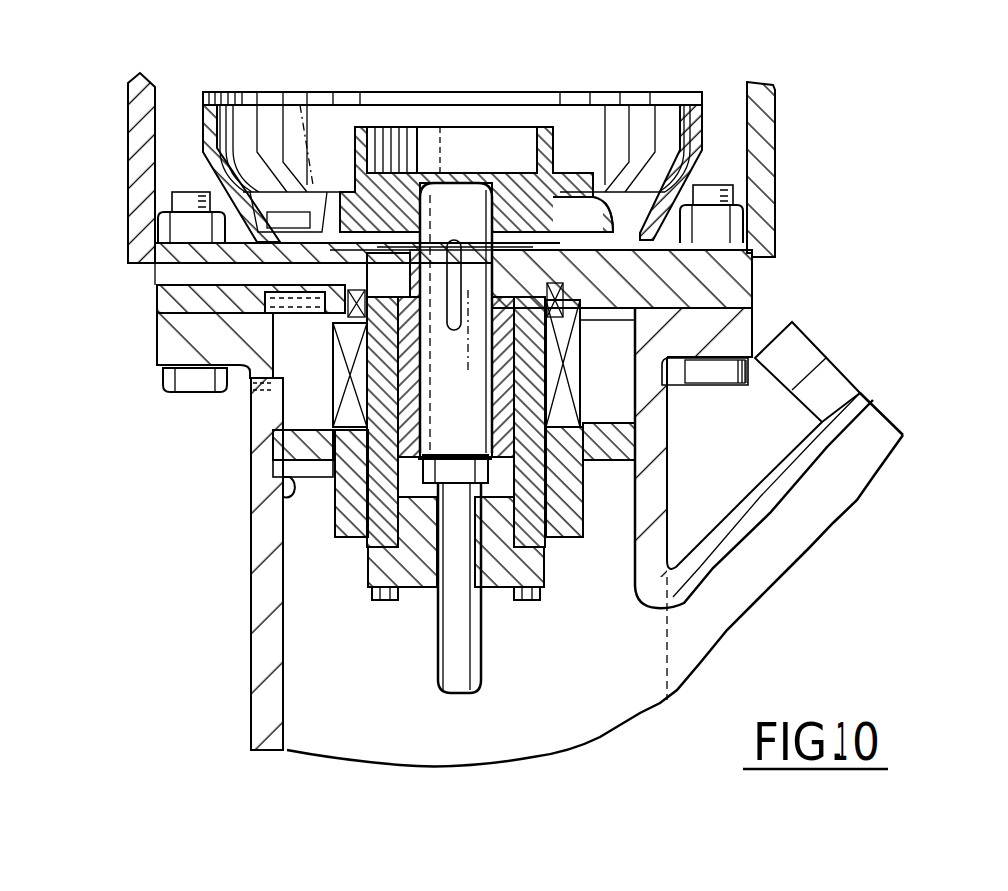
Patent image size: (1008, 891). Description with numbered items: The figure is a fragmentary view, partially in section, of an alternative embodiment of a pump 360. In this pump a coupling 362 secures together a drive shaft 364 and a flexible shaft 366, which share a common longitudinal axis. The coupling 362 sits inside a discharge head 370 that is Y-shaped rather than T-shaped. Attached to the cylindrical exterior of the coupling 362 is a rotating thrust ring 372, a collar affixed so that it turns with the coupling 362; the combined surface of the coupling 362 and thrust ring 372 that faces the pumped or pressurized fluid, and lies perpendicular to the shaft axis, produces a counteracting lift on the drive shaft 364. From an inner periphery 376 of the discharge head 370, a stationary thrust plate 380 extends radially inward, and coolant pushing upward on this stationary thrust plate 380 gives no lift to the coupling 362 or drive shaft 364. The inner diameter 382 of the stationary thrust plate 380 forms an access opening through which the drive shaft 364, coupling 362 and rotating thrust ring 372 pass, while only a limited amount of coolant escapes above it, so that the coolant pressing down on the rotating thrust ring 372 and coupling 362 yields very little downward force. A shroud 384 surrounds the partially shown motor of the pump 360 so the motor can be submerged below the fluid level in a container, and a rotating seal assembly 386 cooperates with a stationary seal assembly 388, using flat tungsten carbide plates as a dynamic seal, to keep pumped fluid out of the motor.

The pump 360 is at (147, 290).
The coupling 362 is at (380, 366).
The drive shaft 364 is at (481, 185).
The flexible shaft 366 is at (478, 650).
The discharge head 370 is at (655, 463).
The rotating thrust ring 372 is at (580, 520).
The inner periphery 376 is at (293, 488).
The stationary thrust plate 380 is at (283, 447).
The inner diameter 382 is at (350, 500).
The shroud 384 is at (131, 80).
The rotating seal assembly 386 is at (574, 394).
The stationary seal assembly 388 is at (592, 300).